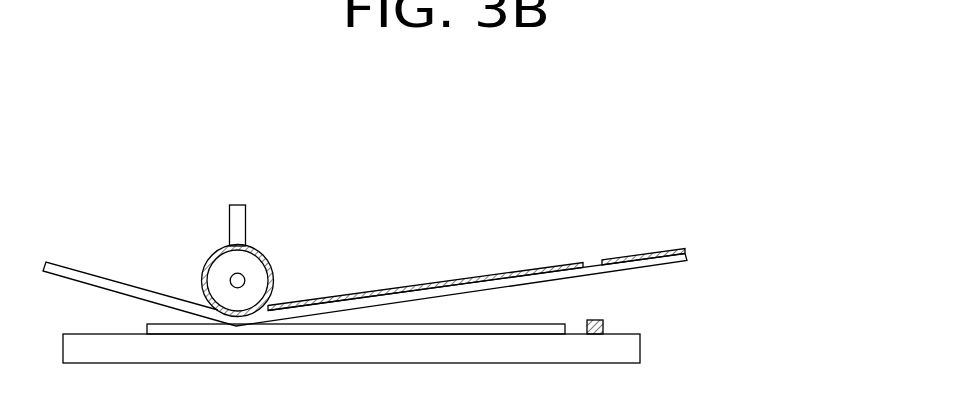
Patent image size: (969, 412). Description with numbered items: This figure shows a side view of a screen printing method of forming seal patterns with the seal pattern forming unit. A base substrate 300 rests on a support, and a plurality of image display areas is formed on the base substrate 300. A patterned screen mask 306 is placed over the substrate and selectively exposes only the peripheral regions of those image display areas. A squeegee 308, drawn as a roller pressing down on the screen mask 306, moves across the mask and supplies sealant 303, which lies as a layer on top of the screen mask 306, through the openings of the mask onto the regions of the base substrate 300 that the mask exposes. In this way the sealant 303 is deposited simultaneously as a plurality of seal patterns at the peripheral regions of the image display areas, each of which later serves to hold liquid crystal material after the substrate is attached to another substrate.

The base substrate 300 is at (625, 352).
The sealant 303 is at (650, 253).
The patterned screen mask 306 is at (688, 257).
The squeegee 308 is at (252, 266).